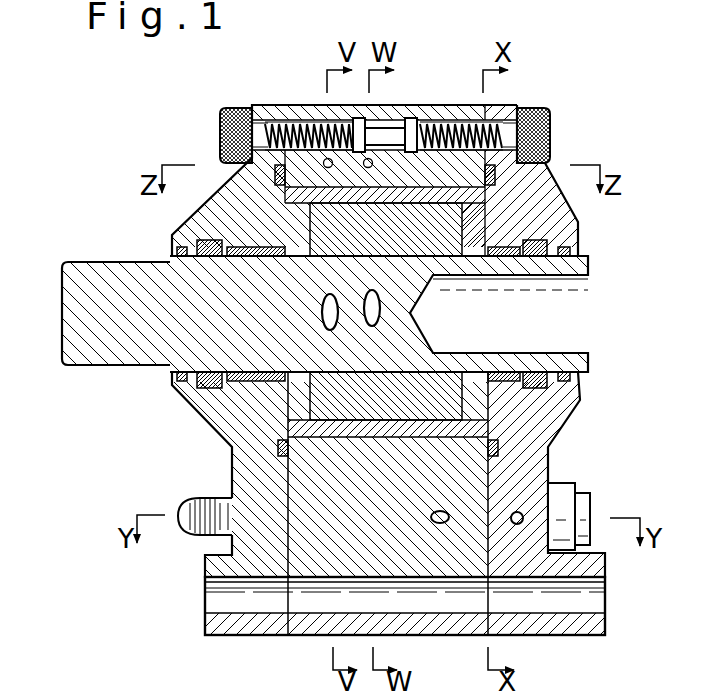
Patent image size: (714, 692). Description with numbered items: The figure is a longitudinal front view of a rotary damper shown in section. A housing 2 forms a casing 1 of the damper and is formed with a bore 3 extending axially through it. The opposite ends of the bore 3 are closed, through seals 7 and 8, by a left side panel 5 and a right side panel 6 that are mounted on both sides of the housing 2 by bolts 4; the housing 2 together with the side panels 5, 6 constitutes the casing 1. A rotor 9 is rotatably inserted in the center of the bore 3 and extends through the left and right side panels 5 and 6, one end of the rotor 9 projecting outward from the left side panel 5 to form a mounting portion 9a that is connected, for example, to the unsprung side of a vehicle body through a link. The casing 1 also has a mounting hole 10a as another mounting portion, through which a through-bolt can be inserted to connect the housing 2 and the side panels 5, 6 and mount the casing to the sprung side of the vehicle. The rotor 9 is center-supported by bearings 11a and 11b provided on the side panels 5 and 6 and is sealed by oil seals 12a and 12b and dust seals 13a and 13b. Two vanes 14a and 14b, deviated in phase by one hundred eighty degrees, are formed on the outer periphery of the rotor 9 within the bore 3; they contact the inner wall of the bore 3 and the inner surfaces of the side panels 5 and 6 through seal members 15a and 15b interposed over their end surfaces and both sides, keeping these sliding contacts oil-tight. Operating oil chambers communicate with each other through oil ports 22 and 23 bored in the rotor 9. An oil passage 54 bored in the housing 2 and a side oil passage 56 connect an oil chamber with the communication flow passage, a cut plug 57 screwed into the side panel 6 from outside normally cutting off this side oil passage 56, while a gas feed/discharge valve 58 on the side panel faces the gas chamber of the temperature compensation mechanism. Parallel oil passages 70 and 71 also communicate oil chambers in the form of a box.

The casing 1 is at (522, 96).
The housing 2 is at (460, 632).
The bore 3 is at (335, 433).
The bolts 4 is at (232, 106).
The left side panel 5 is at (202, 408).
The right side panel 6 is at (552, 405).
The seal 7 is at (278, 448).
The seal 8 is at (498, 450).
The rotor 9 is at (410, 368).
The mounting portion 9a is at (70, 332).
The mounting hole 10a is at (553, 600).
The bearing 11a is at (272, 256).
The bearing 11b is at (503, 372).
The oil seal 12a is at (212, 372).
The oil seal 12b is at (540, 282).
The dust seal 13a is at (168, 250).
The dust seal 13b is at (562, 370).
The vane 14a is at (460, 226).
The vane 14b is at (413, 437).
The seal member 15a is at (398, 200).
The seal member 15b is at (363, 425).
The oil port 22 is at (328, 316).
The oil port 23 is at (377, 300).
The oil passage 54 is at (436, 521).
The side oil passage 56 is at (517, 526).
The cut plug 57 is at (587, 507).
The gas feed/discharge valve 58 is at (182, 523).
The oil passage 70 is at (323, 118).
The oil passage 71 is at (380, 120).